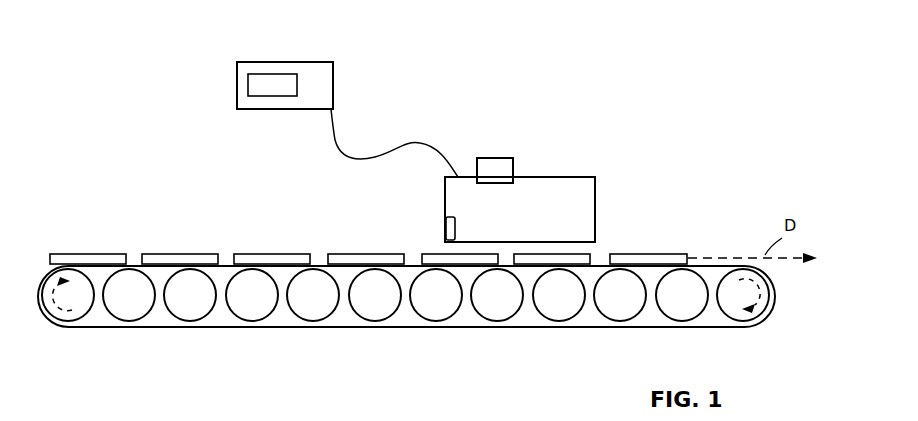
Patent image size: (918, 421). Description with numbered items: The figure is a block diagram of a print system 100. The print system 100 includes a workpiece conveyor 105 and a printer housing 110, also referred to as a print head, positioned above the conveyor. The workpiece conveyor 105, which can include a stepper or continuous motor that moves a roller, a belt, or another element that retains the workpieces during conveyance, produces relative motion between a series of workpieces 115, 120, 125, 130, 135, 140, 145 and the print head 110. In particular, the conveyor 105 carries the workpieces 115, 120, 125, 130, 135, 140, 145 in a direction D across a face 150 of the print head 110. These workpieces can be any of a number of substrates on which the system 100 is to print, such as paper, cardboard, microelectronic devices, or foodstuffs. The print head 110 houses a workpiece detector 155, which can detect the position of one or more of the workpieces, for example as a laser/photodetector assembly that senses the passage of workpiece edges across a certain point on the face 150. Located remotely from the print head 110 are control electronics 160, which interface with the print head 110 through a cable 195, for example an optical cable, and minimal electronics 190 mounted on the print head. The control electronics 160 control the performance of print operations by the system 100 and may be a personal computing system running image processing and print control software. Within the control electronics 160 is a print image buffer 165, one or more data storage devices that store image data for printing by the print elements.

The print system 100 is at (716, 148).
The workpiece conveyor 105 is at (390, 326).
The printer housing 110 is at (597, 181).
The workpiece 115 is at (67, 255).
The workpiece 120 is at (155, 255).
The workpiece 125 is at (245, 255).
The workpiece 130 is at (340, 255).
The workpiece 135 is at (427, 255).
The workpiece 140 is at (593, 250).
The workpiece 145 is at (677, 253).
The face 150 is at (552, 238).
The workpiece detector 155 is at (447, 217).
The control electronics 160 is at (287, 62).
The print image buffer 165 is at (257, 87).
The minimal electronics 190 is at (477, 158).
The cable 195 is at (342, 136).